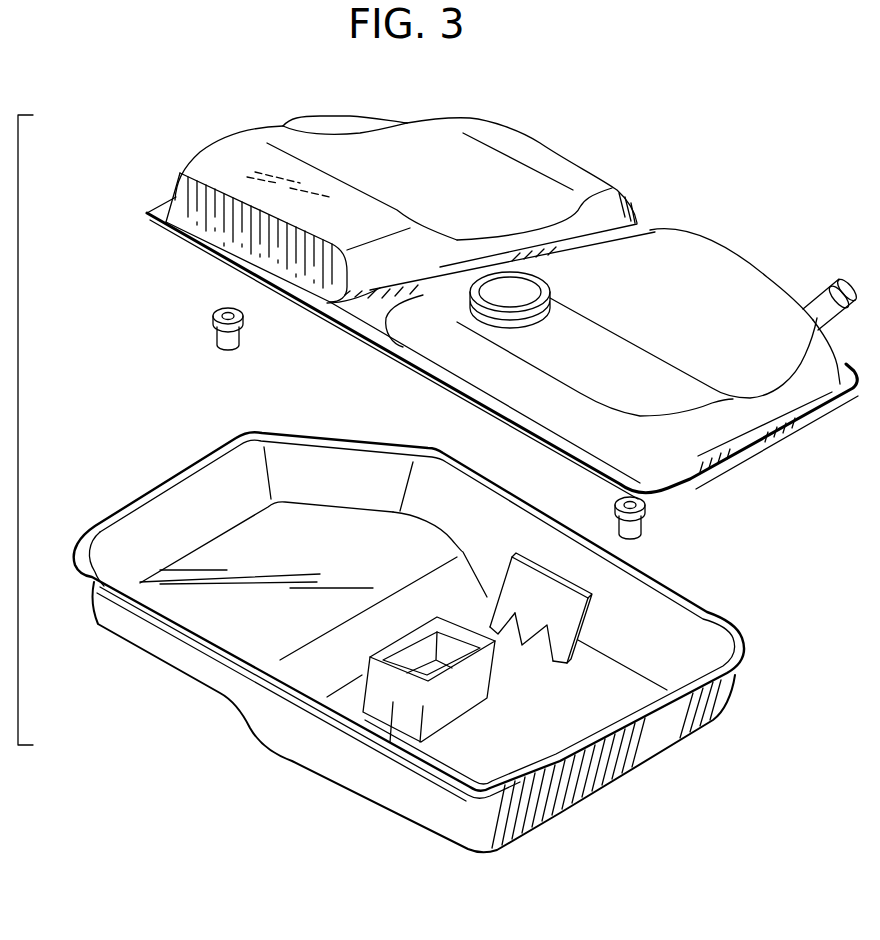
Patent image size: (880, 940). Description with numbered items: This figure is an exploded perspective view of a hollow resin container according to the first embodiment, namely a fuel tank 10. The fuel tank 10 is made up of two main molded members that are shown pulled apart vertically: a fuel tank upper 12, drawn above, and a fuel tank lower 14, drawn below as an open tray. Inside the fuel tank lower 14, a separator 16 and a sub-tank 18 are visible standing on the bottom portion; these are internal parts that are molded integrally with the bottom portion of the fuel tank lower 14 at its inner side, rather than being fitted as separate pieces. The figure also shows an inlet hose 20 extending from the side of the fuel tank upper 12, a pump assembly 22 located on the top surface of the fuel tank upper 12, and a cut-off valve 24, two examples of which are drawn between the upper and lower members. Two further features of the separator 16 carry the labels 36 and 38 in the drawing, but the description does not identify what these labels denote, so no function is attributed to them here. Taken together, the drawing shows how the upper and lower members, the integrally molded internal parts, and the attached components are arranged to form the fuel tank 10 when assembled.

The fuel tank 10 is at (779, 493).
The fuel tank upper 12 is at (736, 434).
The fuel tank lower 14 is at (703, 607).
The separator 16 is at (537, 578).
The sub-tank 18 is at (393, 712).
The inlet hose 20 is at (828, 282).
The pump assembly 22 is at (530, 287).
The cut-off valve 24 is at (233, 340).
The tab of baffle plate 36 is at (503, 617).
The notch of baffle plate 38 is at (536, 650).